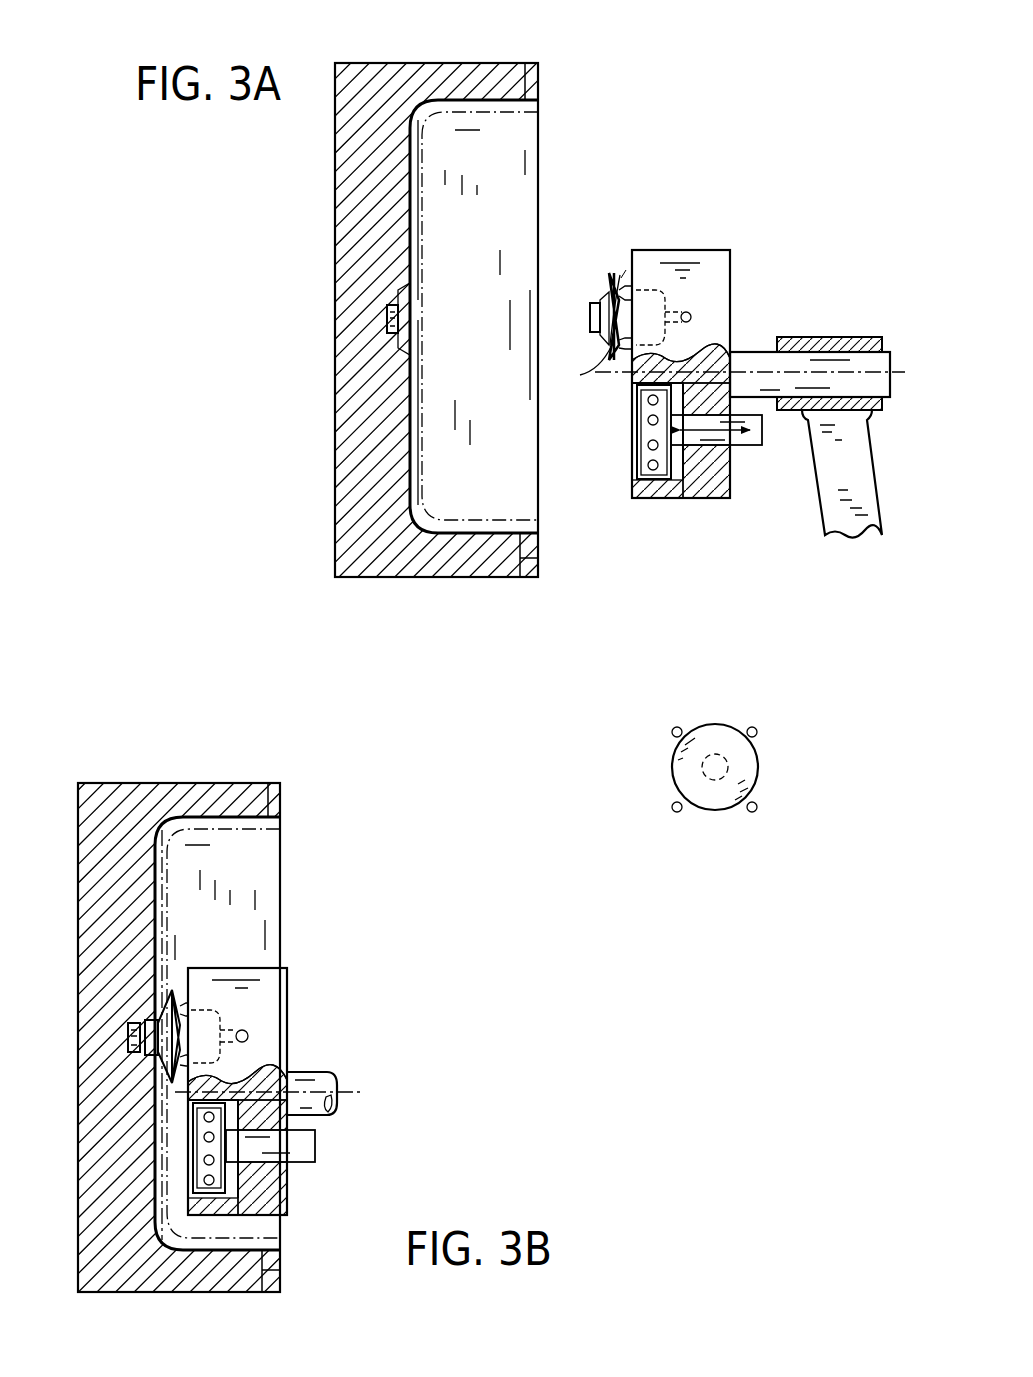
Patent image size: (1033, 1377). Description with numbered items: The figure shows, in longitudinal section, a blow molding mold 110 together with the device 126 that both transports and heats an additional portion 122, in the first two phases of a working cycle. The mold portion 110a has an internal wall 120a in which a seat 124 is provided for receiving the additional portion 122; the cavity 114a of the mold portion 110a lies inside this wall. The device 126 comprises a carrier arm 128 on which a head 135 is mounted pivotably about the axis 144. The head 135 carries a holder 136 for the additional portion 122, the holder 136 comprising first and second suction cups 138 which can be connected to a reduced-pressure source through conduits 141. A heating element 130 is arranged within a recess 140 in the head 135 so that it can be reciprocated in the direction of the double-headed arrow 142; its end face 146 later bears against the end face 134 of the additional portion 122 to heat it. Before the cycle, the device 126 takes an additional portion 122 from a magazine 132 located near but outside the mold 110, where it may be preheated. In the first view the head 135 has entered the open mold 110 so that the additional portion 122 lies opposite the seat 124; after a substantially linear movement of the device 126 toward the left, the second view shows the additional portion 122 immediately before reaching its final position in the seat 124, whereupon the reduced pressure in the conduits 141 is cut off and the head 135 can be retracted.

In FIG. 3A, the blow molding mold 110 is at (312, 494).
In FIG. 3B, the blow molding mold 110 is at (60, 1262).
In FIG. 3A, the mold portion 110a is at (402, 80).
In FIG. 3B, the mold portion 110a is at (152, 805).
In FIG. 3A, the mold cavity 114a is at (512, 150).
In FIG. 3B, the mold cavity 114a is at (262, 855).
In FIG. 3A, the internal wall 120a is at (411, 222).
In FIG. 3A, the additional portion 122 is at (600, 300).
In FIG. 3B, the additional portion 122 is at (150, 1025).
In FIG. 3A, the seat 124 is at (410, 340).
In FIG. 3B, the seat 124 is at (140, 1050).
In FIG. 3A, the device 126 is at (802, 516).
In FIG. 3A, the carrier arm 128 is at (838, 468).
In FIG. 3A, the heating element 130 is at (645, 470).
In FIG. 3B, the heating element 130 is at (200, 1150).
In FIG. 3A, the magazine 132 is at (718, 722).
In FIG. 3B, the end face 134 is at (222, 1030).
In FIG. 3A, the head 135 is at (714, 262).
In FIG. 3B, the head 135 is at (278, 1000).
In FIG. 3A, the holder 136 is at (623, 268).
In FIG. 3A, the suction cups 138 is at (600, 360).
In FIG. 3B, the suction cups 138 is at (181, 1035).
In FIG. 3A, the recess 140 is at (675, 478).
In FIG. 3B, the recess 140 is at (238, 1198).
In FIG. 3A, the conduits 141 is at (690, 335).
In FIG. 3A, the double-headed arrow 142 is at (708, 445).
In FIG. 3A, the axis 144 is at (748, 372).
In FIG. 3B, the axis 144 is at (337, 1095).
In FIG. 3B, the end face 146 is at (198, 1168).